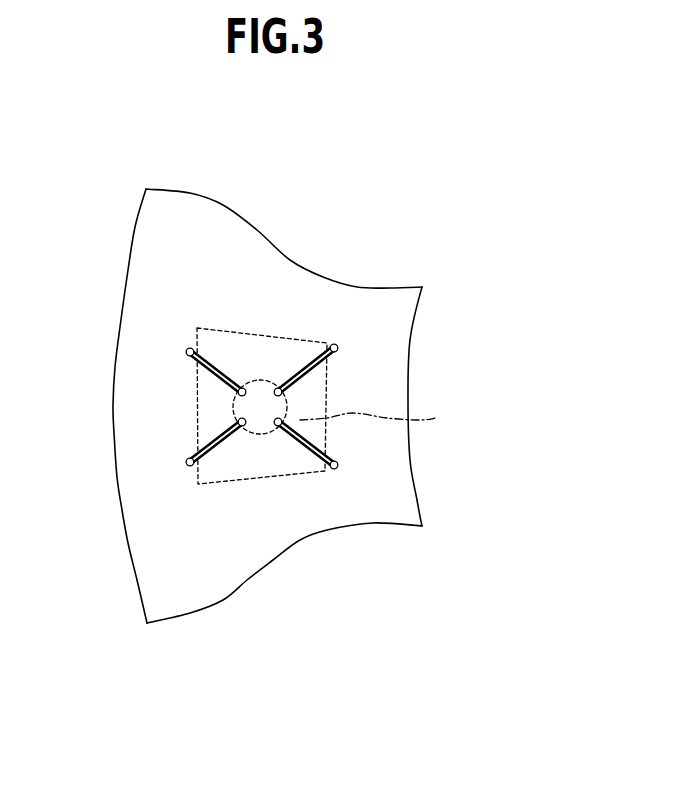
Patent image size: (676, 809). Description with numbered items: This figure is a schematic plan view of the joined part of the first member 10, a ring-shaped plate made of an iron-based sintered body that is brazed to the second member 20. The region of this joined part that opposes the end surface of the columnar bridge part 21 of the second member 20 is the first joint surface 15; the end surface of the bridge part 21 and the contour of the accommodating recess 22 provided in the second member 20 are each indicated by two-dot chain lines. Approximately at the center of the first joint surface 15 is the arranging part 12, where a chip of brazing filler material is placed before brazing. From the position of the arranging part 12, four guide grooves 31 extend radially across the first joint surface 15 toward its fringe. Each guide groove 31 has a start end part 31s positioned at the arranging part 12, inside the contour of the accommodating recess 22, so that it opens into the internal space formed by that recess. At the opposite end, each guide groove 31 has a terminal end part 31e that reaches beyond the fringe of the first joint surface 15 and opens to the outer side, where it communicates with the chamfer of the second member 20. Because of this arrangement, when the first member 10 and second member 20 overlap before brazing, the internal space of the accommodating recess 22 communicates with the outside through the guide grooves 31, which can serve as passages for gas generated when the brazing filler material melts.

The first member 10 is at (133, 228).
The arranging part 12 is at (253, 412).
The first joint surface 15 is at (218, 400).
The second member 20 is at (376, 406).
The bridge part 21 is at (384, 423).
The accommodating recess 22 is at (280, 403).
The guide groove 31 is at (221, 368).
The terminal end part 31e is at (188, 350).
The start end part 31s is at (243, 390).